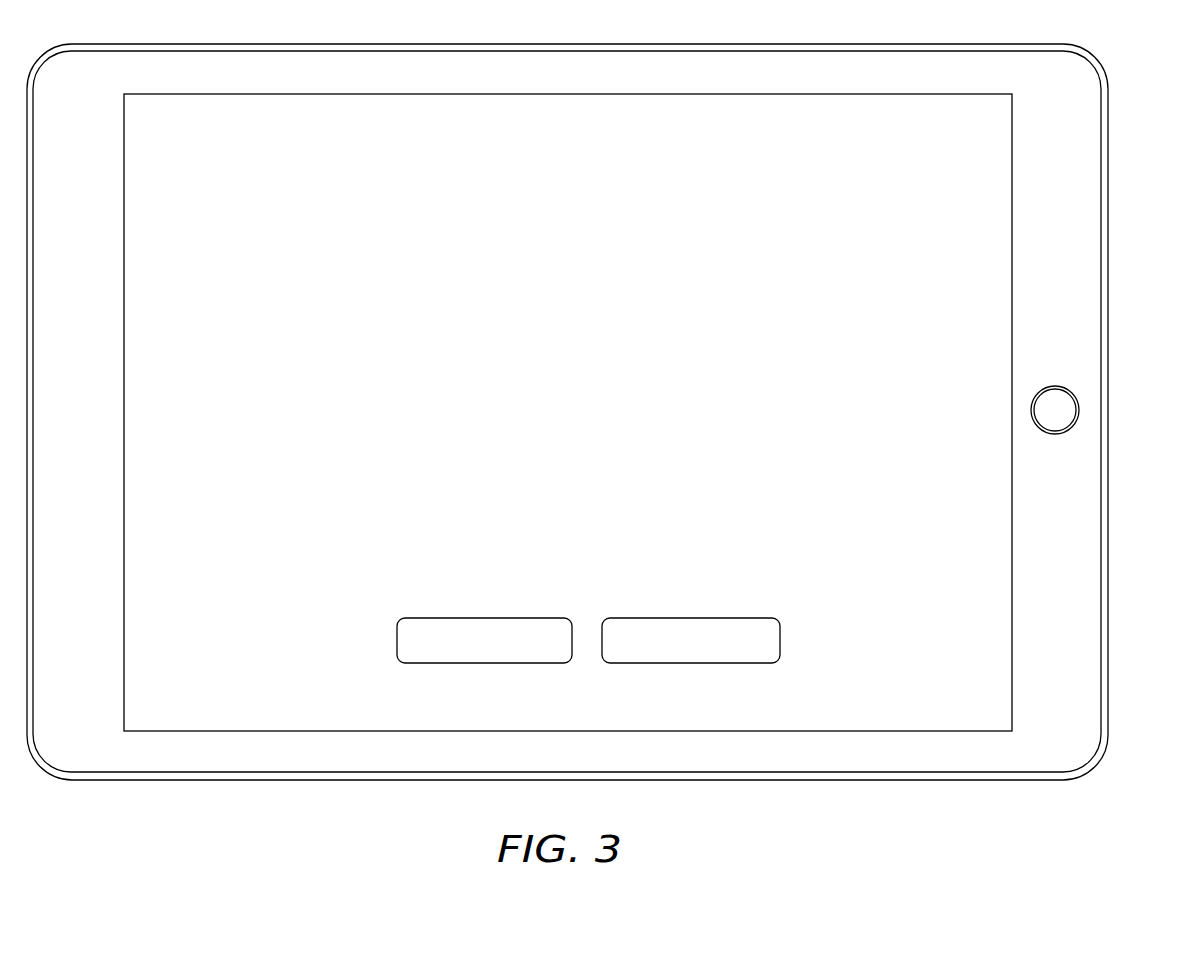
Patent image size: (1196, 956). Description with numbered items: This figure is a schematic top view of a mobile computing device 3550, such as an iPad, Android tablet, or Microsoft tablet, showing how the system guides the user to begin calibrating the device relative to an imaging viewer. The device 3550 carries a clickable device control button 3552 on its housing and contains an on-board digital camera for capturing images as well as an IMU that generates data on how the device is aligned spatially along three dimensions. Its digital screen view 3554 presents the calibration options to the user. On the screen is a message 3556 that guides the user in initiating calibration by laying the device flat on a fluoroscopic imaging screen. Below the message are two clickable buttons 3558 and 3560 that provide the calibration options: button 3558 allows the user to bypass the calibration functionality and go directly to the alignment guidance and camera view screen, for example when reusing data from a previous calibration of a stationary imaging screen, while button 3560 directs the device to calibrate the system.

The mobile computing device 3550 is at (618, 43).
The device control button 3552 is at (1050, 403).
The digital screen view 3554 is at (280, 212).
The message 3556 is at (592, 370).
The clickable button 3558 is at (512, 618).
The clickable button 3560 is at (708, 618).